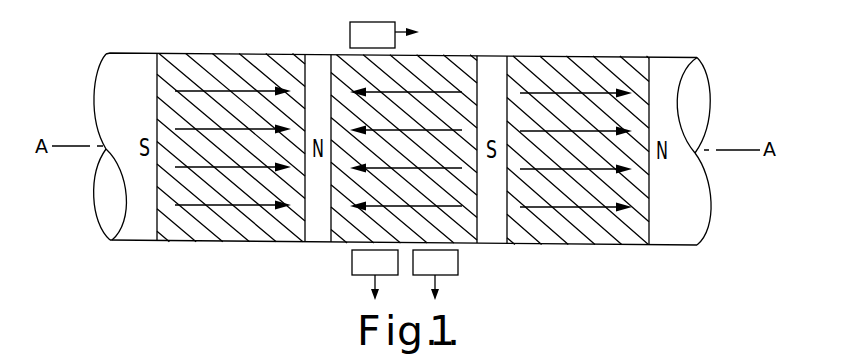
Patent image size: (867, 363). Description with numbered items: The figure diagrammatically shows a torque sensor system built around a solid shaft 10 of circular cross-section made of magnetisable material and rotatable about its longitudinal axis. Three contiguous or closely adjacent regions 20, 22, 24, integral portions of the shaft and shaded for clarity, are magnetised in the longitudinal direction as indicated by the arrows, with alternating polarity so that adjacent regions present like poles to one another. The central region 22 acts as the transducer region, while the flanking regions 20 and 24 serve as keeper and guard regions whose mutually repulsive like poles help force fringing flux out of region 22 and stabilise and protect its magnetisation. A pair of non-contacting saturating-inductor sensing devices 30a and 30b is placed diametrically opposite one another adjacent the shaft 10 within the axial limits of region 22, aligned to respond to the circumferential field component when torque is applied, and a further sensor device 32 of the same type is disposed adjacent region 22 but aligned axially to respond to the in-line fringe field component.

The shaft 10 is at (700, 228).
The keeper and guard region 20 is at (190, 67).
The transducer region 22 is at (461, 68).
The keeper and guard region 24 is at (594, 70).
The sensing device 30a is at (359, 33).
The sensing device 30b is at (360, 262).
The sensor device 32 is at (458, 266).